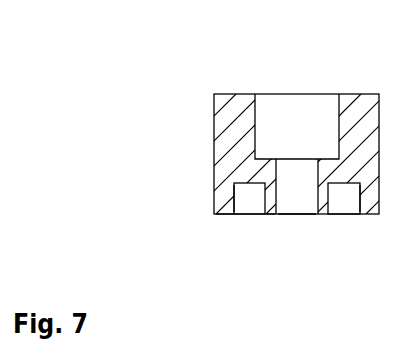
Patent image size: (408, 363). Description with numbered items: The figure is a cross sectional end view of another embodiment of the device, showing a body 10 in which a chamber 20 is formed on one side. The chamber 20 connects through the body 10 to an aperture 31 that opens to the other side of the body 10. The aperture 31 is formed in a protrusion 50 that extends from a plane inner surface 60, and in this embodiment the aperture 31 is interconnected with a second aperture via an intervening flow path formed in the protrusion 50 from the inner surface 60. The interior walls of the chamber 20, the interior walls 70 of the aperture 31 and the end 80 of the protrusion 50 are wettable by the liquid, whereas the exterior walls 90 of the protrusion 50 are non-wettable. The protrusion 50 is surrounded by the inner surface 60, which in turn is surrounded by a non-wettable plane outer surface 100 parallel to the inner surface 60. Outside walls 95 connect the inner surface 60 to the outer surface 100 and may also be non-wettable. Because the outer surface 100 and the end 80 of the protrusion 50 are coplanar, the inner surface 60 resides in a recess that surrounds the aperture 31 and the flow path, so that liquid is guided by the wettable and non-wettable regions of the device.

The body 10 is at (365, 97).
The chamber 20 is at (283, 110).
The aperture 31 is at (306, 205).
The protrusion 50 is at (270, 214).
The inner surface 60 is at (246, 186).
The interior walls of the aperture 70 is at (276, 190).
The end of the protrusion 80 is at (323, 188).
The exterior walls of the protrusion 90 is at (360, 197).
The outside walls 95 is at (234, 197).
The outer surface 100 is at (236, 213).